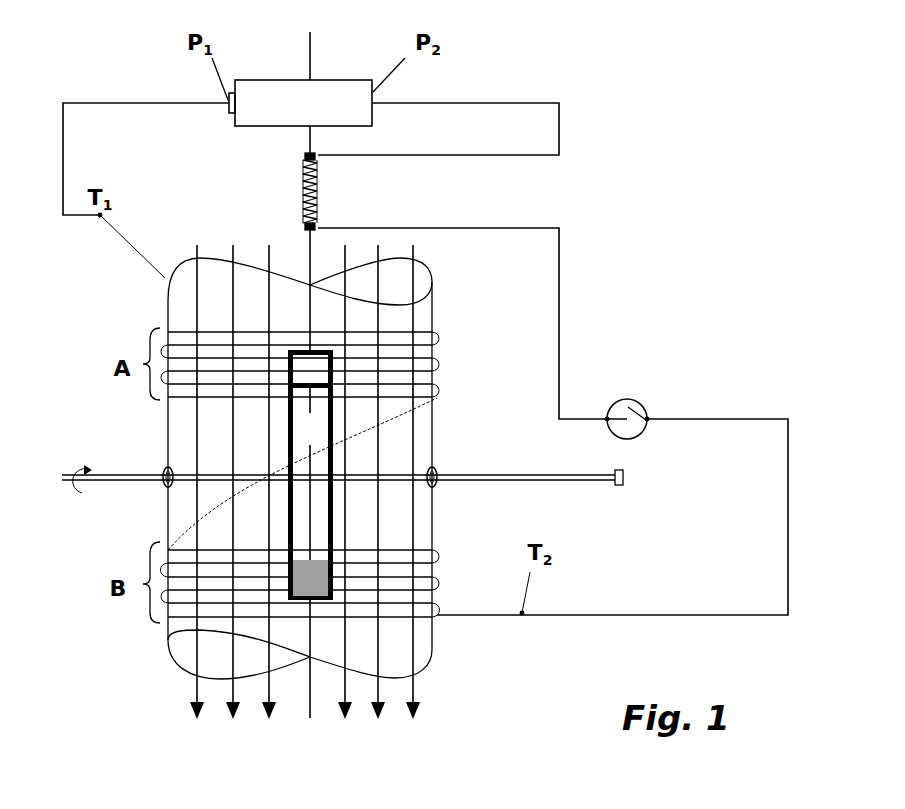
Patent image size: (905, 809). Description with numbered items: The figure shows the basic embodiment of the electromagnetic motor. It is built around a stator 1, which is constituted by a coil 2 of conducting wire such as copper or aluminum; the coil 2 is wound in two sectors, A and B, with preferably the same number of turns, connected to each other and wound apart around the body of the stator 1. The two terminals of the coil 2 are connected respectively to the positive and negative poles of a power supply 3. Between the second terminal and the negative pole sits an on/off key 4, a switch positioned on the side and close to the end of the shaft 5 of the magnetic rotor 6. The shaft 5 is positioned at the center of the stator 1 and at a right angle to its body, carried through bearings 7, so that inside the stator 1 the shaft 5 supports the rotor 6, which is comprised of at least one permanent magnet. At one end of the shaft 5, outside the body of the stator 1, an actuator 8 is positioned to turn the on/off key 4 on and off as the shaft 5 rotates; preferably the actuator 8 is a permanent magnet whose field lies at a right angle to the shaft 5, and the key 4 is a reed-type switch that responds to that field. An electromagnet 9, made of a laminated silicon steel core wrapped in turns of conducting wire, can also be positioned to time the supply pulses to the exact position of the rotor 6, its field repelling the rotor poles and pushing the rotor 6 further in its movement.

The stator 1 is at (165, 297).
The coil 2 is at (437, 352).
The power supply 3 is at (309, 361).
The on/off key 4 is at (645, 404).
The shaft 5 is at (120, 482).
The magnetic rotor 6 is at (318, 439).
The bearings 7 is at (165, 470).
The actuator 8 is at (623, 468).
The electromagnet 9 is at (302, 176).